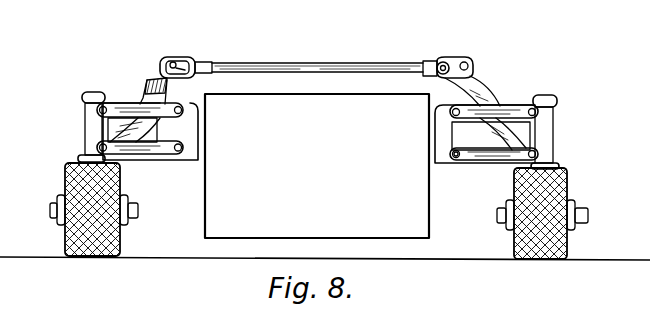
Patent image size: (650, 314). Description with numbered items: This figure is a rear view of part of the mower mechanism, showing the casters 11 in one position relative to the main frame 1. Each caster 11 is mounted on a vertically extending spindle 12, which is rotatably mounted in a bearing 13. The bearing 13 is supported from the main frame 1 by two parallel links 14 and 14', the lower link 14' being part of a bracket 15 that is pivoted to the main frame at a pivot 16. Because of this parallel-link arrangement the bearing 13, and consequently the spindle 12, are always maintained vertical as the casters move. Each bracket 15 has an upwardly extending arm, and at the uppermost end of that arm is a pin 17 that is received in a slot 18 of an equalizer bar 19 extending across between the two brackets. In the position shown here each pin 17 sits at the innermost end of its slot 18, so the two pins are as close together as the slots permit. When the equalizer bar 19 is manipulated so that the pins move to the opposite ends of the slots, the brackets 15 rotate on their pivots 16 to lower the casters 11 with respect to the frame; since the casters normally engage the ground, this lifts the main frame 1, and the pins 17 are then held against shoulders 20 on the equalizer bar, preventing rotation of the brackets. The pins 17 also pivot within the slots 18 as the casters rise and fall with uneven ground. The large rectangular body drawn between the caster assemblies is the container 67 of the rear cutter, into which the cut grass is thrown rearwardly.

The main frame 1 is at (188, 158).
The caster 11 is at (78, 257).
The spindle 12 is at (98, 80).
The bearing 13 is at (88, 128).
The link 14 is at (317, 86).
The link 14' is at (317, 163).
The bracket 15 is at (150, 78).
The pivot 16 is at (457, 160).
The pin 17 is at (187, 63).
The slot 18 is at (172, 85).
The equalizer bar 19 is at (332, 53).
The shoulder 20 is at (172, 58).
The container 67 is at (317, 166).